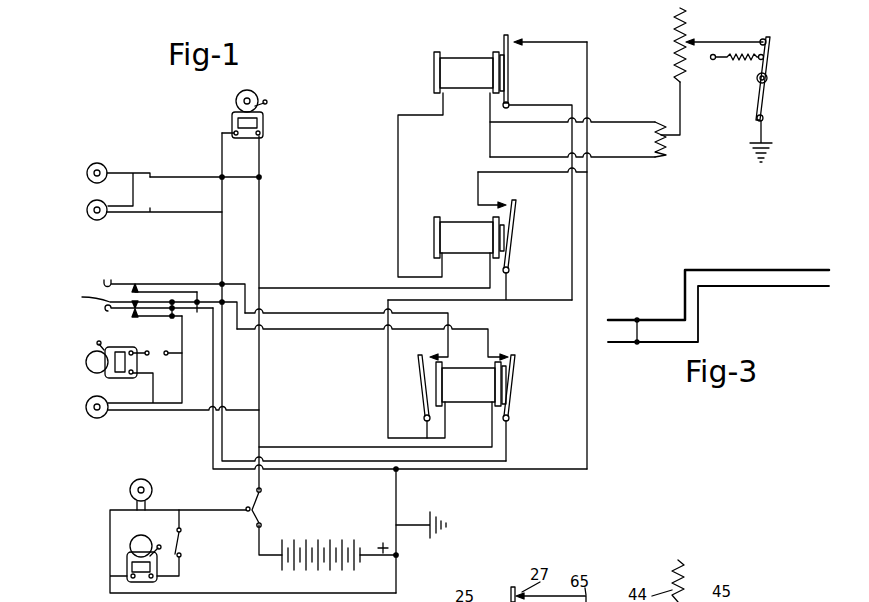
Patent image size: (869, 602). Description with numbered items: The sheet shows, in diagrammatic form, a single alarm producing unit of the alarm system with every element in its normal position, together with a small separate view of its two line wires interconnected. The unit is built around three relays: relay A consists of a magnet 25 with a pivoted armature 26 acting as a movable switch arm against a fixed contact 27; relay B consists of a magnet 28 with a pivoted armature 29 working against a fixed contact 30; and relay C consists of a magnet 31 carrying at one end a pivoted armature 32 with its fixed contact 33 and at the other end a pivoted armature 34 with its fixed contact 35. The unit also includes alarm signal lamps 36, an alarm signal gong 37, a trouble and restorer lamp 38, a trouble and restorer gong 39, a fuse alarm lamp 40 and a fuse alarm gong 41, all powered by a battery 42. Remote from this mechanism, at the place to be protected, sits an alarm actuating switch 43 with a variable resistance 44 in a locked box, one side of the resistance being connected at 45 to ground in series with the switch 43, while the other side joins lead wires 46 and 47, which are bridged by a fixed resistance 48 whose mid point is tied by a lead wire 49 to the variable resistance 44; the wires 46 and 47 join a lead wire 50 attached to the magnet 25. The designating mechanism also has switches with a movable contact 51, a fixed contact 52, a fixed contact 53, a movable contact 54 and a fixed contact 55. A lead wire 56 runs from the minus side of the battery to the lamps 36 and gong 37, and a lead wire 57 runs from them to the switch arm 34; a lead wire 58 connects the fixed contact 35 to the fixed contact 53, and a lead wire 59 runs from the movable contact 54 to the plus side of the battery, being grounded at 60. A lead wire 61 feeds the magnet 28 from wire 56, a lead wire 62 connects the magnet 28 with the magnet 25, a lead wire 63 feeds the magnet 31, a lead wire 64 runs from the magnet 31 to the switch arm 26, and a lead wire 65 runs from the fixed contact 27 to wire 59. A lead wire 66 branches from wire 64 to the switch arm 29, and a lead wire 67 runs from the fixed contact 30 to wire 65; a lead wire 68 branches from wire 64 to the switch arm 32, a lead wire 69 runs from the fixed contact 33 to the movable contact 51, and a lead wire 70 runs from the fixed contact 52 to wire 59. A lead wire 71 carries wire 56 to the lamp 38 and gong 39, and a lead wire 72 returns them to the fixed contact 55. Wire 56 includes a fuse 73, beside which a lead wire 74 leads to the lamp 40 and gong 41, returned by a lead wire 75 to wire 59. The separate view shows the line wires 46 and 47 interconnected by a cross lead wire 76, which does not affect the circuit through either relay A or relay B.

In FIG. 1, the magnet 25 is at (453, 54).
In FIG. 1, the pivoted armature 26 is at (510, 58).
In FIG. 1, the fixed contact 27 is at (520, 45).
In FIG. 1, the magnet 28 is at (432, 221).
In FIG. 1, the pivoted armature 29 is at (517, 218).
In FIG. 1, the fixed contact 30 is at (505, 203).
In FIG. 1, the magnet 31 is at (477, 401).
In FIG. 1, the pivoted armature 32 is at (419, 373).
In FIG. 1, the fixed contact 33 is at (432, 355).
In FIG. 1, the pivoted armature 34 is at (516, 397).
In FIG. 1, the fixed contact 35 is at (508, 353).
In FIG. 1, the alarm signal lamps 36 is at (86, 182).
In FIG. 1, the alarm signal gong 37 is at (266, 95).
In FIG. 1, the trouble and restorer lamp 38 is at (88, 399).
In FIG. 1, the trouble and restorer gong 39 is at (86, 361).
In FIG. 1, the fuse alarm lamp 40 is at (143, 478).
In FIG. 1, the fuse alarm gong 41 is at (126, 545).
In FIG. 1, the battery 42 is at (338, 545).
In FIG. 1, the alarm actuating switch 43 is at (768, 99).
In FIG. 1, the variable resistance 44 is at (686, 32).
In FIG. 1, the ground connection 45 is at (764, 38).
In FIG. 1, the lead wire 46 is at (530, 124).
In FIG. 3, the lead wire 46 is at (771, 268).
In FIG. 1, the lead wire 47 is at (515, 144).
In FIG. 3, the lead wire 47 is at (758, 289).
In FIG. 1, the fixed resistance 48 is at (668, 149).
In FIG. 1, the lead wire 49 is at (682, 118).
In FIG. 1, the lead wire 50 is at (489, 106).
In FIG. 1, the movable contact 51 is at (145, 283).
In FIG. 1, the fixed contact 52 is at (162, 292).
In FIG. 1, the fixed contact 53 is at (150, 308).
In FIG. 1, the movable contact 54 is at (106, 310).
In FIG. 1, the fixed contact 55 is at (140, 322).
In FIG. 1, the lead wire 56 is at (180, 177).
In FIG. 1, the lead wire 57 is at (220, 199).
In FIG. 1, the lead wire 58 is at (330, 330).
In FIG. 1, the lead wire 59 is at (183, 318).
In FIG. 1, the ground 60 is at (441, 521).
In FIG. 1, the lead wire 61 is at (328, 288).
In FIG. 1, the lead wire 62 is at (397, 172).
In FIG. 1, the lead wire 63 is at (311, 447).
In FIG. 1, the lead wire 64 is at (547, 104).
In FIG. 1, the lead wire 65 is at (565, 44).
In FIG. 1, the lead wire 66 is at (508, 290).
In FIG. 1, the lead wire 67 is at (478, 185).
In FIG. 1, the lead wire 68 is at (424, 422).
In FIG. 1, the lead wire 69 is at (337, 313).
In FIG. 1, the lead wire 70 is at (198, 292).
In FIG. 1, the lead wire 71 is at (154, 392).
In FIG. 1, the lead wire 72 is at (183, 345).
In FIG. 1, the fuse 73 is at (258, 505).
In FIG. 1, the lead wire 74 is at (165, 510).
In FIG. 1, the lead wire 75 is at (110, 570).
In FIG. 3, the lead wire 76 is at (640, 332).